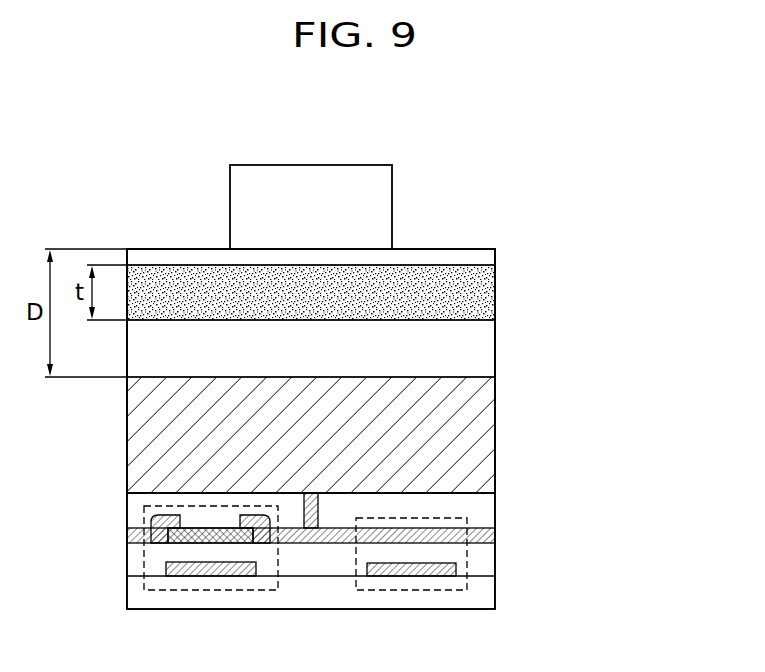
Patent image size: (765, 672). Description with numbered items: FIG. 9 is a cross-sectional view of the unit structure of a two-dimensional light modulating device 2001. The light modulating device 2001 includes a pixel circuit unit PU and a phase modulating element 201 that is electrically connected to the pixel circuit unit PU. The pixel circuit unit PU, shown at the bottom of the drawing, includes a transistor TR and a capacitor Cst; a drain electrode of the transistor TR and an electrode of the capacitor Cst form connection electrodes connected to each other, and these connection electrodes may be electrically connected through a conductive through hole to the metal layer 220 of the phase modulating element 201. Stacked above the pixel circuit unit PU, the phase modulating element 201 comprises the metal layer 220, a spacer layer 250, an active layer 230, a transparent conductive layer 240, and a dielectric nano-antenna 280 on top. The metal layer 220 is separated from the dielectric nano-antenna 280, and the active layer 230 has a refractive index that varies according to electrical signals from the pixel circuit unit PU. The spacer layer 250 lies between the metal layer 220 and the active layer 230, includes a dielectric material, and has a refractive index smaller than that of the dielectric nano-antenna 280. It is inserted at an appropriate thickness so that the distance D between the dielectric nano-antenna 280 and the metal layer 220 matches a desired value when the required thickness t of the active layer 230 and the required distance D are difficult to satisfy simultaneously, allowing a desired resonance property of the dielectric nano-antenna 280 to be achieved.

The 2D light modulating device 2001 is at (603, 140).
The dielectric nano-antenna 280 is at (378, 203).
The phase modulating element 201 is at (581, 177).
The transparent conductive layer 240 is at (486, 258).
The active layer 230 is at (488, 294).
The spacer layer 250 is at (488, 354).
The metal layer 220 is at (477, 437).
The pixel circuit unit PU is at (377, 577).
The transistor TR is at (211, 590).
The capacitor Cst is at (411, 589).